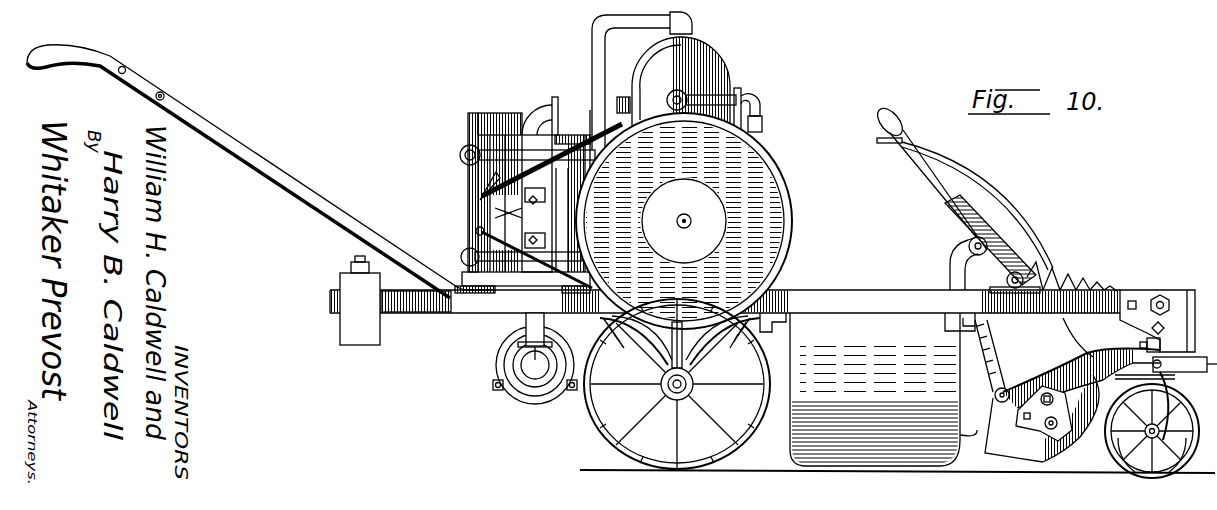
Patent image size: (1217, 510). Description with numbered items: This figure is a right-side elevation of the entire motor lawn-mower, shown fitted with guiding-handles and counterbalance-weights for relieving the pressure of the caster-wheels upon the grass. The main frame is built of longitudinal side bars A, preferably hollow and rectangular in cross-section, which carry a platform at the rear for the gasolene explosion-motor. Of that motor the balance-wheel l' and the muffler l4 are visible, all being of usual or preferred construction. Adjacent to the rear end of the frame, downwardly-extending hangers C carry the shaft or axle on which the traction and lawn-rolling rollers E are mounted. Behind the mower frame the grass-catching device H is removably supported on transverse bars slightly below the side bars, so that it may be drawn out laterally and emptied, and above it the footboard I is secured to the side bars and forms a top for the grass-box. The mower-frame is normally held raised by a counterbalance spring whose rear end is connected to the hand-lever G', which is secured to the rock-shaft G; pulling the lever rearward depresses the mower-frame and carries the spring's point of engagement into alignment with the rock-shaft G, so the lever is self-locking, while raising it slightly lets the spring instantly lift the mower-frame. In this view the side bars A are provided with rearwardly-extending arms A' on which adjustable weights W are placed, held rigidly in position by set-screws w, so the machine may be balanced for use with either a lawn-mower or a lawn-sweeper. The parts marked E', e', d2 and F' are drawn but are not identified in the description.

The footboard I is at (252, 150).
The set-screws w is at (355, 262).
The weights W is at (366, 347).
The side bars A is at (773, 315).
The rearwardly-extending arms A' is at (423, 317).
The engine / motor housing E' is at (538, 150).
The exhaust pipe e' is at (632, 77).
The balance-wheel l' is at (698, 221).
The muffler l4 is at (527, 381).
The traction and lawn-rolling rollers E is at (557, 377).
The hangers C is at (600, 457).
The wheel hub / axle d2 is at (648, 398).
The grass-catching device H is at (868, 389).
The rock-shaft G is at (1033, 250).
The hand-lever G' is at (952, 194).
The arcuate rack / guide F' is at (977, 199).